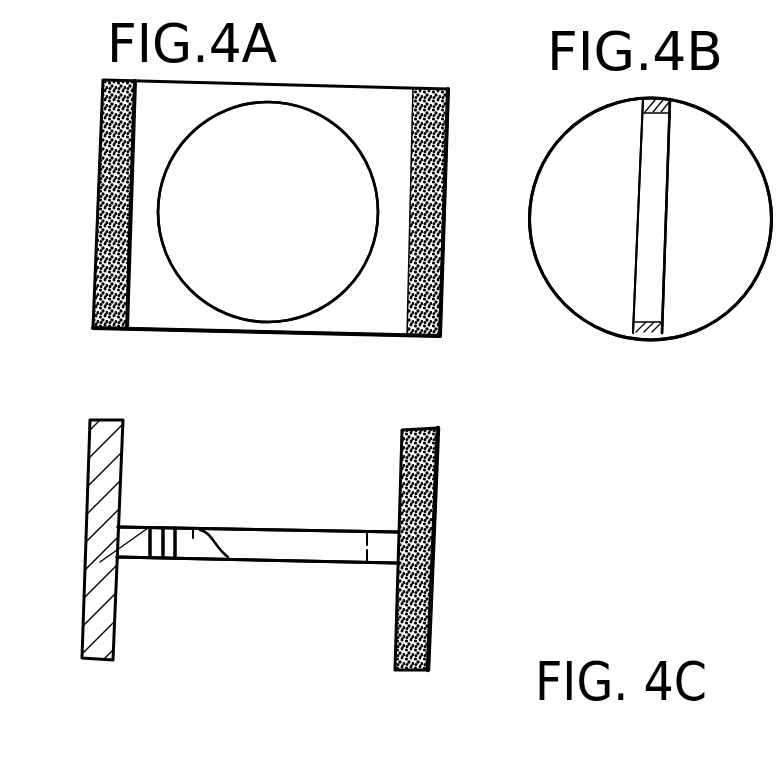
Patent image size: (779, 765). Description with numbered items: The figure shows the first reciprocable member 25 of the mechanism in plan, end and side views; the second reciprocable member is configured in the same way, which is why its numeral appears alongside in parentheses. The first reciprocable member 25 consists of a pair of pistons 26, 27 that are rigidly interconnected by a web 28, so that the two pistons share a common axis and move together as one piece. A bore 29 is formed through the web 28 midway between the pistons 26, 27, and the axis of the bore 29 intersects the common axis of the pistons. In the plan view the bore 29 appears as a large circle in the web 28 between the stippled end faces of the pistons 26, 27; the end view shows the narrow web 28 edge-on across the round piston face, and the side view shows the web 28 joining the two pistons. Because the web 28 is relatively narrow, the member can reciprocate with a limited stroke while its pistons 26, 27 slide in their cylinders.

In FIG. 4A, the first reciprocable member 25 is at (347, 95).
In FIG. 4B, the first reciprocable member 25 is at (588, 280).
In FIG. 4C, the first reciprocable member 25 is at (440, 602).
In FIG. 4A, the piston 26 is at (110, 167).
In FIG. 4B, the piston 26 is at (555, 153).
In FIG. 4C, the piston 26 is at (95, 602).
In FIG. 4A, the piston 27 is at (420, 258).
In FIG. 4C, the piston 27 is at (407, 600).
In FIG. 4A, the web 28 is at (170, 122).
In FIG. 4B, the web 28 is at (640, 107).
In FIG. 4C, the web 28 is at (268, 547).
In FIG. 4A, the bore 29 is at (275, 223).
In FIG. 4B, the bore 29 is at (657, 220).
In FIG. 4C, the bore 29 is at (183, 548).